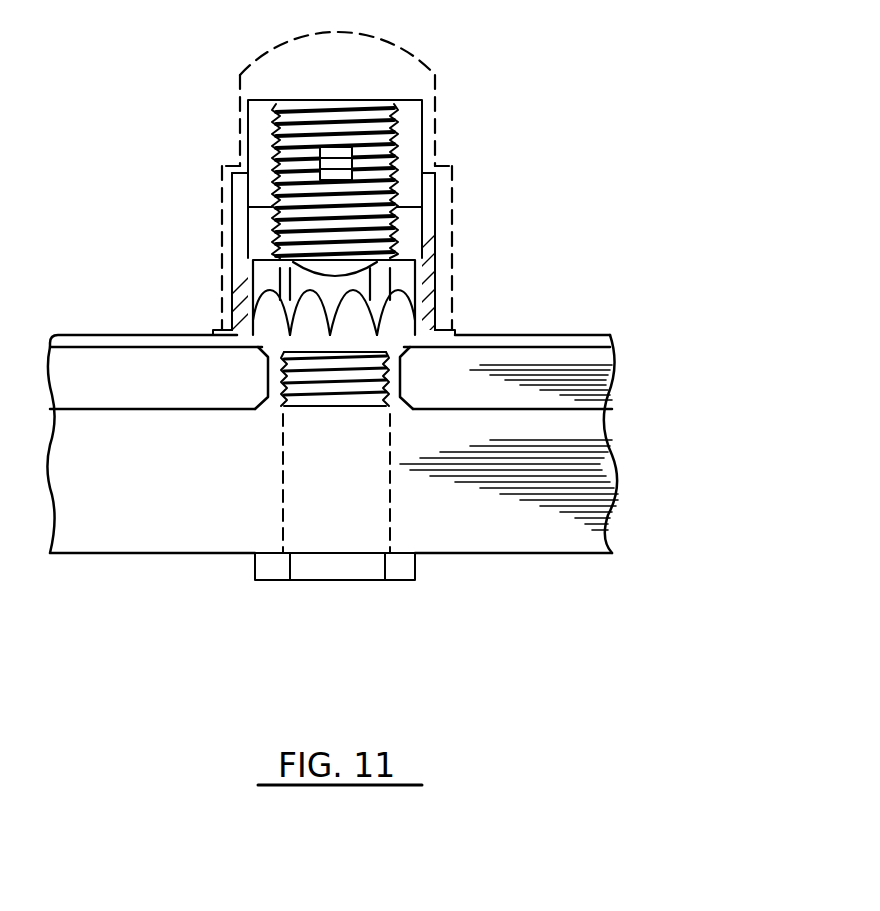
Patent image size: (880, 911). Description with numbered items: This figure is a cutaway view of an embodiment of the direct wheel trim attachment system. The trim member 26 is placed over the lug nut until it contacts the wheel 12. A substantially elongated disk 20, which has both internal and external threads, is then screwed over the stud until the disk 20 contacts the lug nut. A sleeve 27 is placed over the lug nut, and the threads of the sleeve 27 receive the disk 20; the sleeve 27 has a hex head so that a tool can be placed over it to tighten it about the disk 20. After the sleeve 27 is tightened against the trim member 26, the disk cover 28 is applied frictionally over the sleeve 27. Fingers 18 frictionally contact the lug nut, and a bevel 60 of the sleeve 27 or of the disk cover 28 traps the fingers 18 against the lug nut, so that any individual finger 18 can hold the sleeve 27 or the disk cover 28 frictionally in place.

The wheel 12 is at (612, 390).
The fingers 18 is at (250, 297).
The substantially elongated disk 20 is at (433, 153).
The trim member 26 is at (580, 335).
The sleeve 27 is at (437, 187).
The disk cover 28 is at (427, 68).
The bevel 60 is at (265, 307).